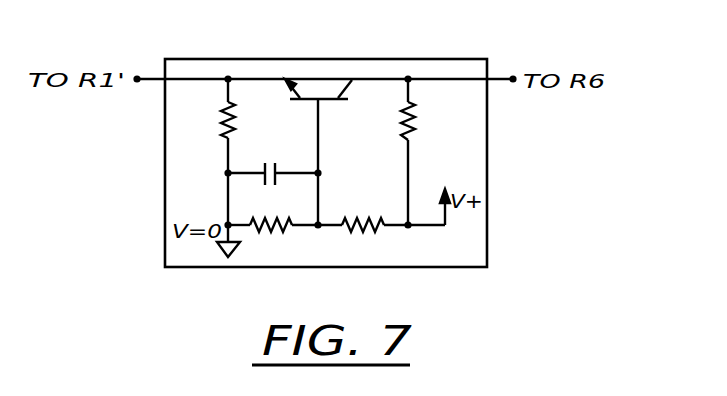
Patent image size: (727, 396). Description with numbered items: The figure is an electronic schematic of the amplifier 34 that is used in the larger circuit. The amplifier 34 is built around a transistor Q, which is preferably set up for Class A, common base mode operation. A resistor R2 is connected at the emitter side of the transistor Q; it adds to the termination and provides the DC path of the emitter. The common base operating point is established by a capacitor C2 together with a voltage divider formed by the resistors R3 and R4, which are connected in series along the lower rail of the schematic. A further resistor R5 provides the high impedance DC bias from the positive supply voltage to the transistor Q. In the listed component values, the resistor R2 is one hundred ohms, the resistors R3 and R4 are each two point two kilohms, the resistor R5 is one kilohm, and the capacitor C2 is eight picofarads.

The amplifier 34 is at (370, 59).
The resistor R2 is at (205, 120).
The resistor R3 is at (271, 239).
The resistor R4 is at (361, 239).
The resistor R5 is at (428, 121).
The capacitor C2 is at (267, 163).
The transistor Q is at (318, 86).